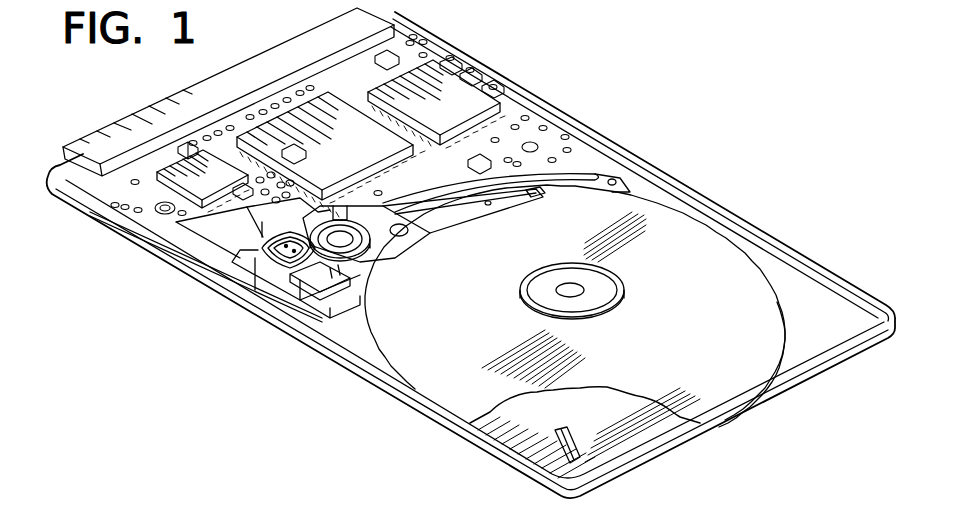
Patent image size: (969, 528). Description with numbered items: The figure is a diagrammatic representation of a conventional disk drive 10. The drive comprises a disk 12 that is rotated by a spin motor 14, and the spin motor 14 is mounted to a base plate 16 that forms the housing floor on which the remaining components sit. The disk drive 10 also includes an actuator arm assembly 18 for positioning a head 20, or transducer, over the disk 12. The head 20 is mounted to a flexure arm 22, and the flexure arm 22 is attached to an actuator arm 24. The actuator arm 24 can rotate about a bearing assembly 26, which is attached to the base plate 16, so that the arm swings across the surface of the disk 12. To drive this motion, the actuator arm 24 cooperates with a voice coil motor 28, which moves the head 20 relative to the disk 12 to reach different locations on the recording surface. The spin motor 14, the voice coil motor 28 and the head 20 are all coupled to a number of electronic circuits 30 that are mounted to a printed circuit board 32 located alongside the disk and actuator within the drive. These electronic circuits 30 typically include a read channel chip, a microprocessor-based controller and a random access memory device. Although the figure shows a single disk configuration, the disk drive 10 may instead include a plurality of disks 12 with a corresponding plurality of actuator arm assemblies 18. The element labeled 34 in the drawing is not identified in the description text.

The disk drive 10 is at (616, 124).
The disk 12 is at (684, 336).
The spin motor 14 is at (612, 299).
The base plate 16 is at (807, 297).
The actuator arm assembly 18 is at (497, 224).
The head 20 is at (548, 190).
The flexure arm 22 is at (458, 222).
The actuator arm 24 is at (383, 237).
The bearing assembly 26 is at (366, 250).
The voice coil motor 28 is at (263, 262).
The electronic circuits 30 is at (451, 110).
The printed circuit board 32 is at (347, 80).
The flex circuit 34 is at (440, 196).